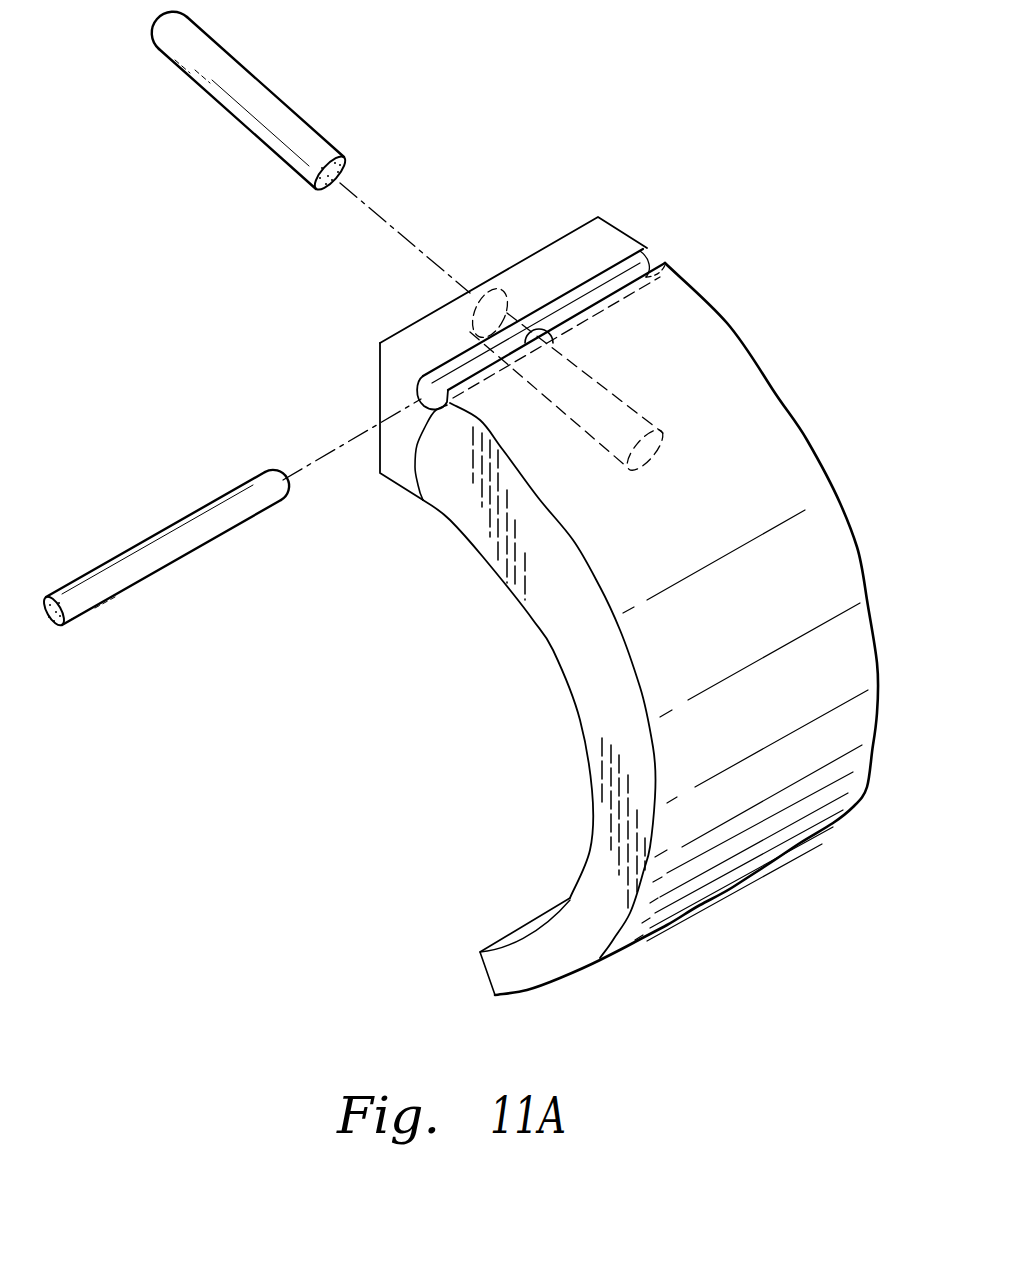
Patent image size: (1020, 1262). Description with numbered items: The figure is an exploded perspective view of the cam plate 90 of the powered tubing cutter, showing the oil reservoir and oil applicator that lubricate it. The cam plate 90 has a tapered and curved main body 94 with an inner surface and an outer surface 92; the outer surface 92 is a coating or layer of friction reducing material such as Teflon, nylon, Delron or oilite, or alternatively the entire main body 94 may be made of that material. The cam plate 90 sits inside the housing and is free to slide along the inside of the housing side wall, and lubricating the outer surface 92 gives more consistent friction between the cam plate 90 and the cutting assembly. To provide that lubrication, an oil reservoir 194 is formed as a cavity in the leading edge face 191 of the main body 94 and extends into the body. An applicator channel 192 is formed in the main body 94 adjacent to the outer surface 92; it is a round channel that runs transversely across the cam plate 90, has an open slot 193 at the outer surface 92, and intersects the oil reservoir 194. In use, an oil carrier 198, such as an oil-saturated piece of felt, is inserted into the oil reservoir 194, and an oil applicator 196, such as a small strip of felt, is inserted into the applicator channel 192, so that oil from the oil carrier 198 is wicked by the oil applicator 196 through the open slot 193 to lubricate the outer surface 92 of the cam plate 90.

The cam plate 90 is at (790, 133).
The outer surface 92 is at (770, 463).
The main body 94 is at (568, 643).
The leading edge face 191 is at (378, 343).
The applicator channel 192 is at (420, 510).
The open slot 193 is at (578, 283).
The oil reservoir 194 is at (613, 390).
The oil applicator 196 is at (158, 528).
The oil carrier 198 is at (274, 94).